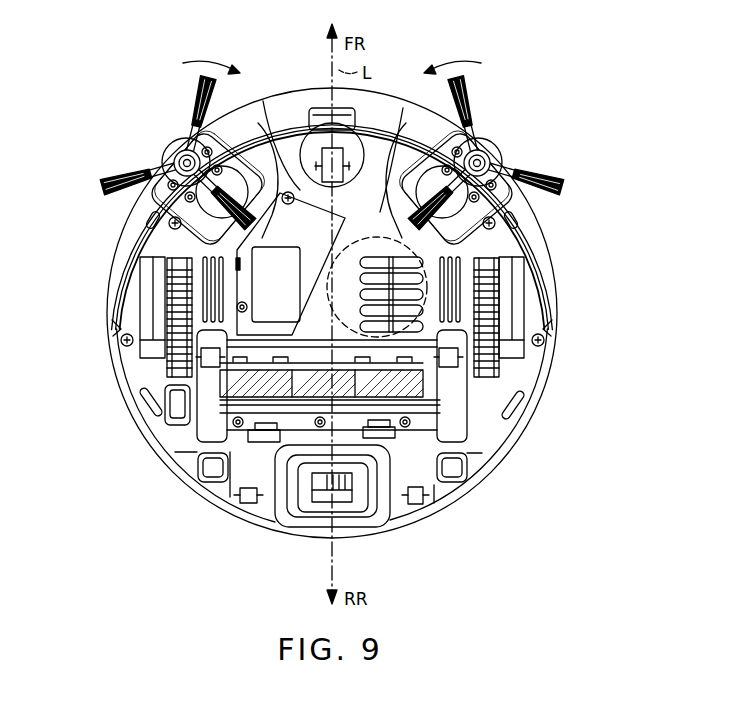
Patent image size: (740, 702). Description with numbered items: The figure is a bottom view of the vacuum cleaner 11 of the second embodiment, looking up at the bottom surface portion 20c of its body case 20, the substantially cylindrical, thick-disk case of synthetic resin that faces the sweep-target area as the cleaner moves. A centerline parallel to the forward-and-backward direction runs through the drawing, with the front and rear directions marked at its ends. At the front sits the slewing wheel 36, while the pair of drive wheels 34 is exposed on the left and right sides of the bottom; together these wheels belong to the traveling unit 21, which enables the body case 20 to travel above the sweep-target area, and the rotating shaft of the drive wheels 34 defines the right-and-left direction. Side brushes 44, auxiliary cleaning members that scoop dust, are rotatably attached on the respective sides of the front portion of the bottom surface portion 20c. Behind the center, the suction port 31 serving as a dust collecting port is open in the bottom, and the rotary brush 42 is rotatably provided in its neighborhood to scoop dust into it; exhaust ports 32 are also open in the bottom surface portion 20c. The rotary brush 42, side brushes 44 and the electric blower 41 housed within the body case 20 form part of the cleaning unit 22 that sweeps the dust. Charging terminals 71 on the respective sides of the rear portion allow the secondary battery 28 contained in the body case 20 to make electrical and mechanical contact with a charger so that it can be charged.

The vacuum cleaner 11 is at (410, 85).
The body case 20 is at (290, 85).
The bottom surface portion 20c is at (497, 428).
The traveling unit 21 is at (558, 313).
The cleaning unit 22 is at (432, 387).
The secondary battery 28 is at (263, 101).
The suction port 31 is at (345, 398).
The exhaust ports 32 is at (403, 258).
The drive wheels 34 is at (175, 290).
The slewing wheel 36 is at (345, 162).
The electric blower 41 is at (362, 237).
The rotary brush 42 is at (217, 383).
The side brushes 44 is at (156, 133).
The charging terminals 71 is at (215, 472).